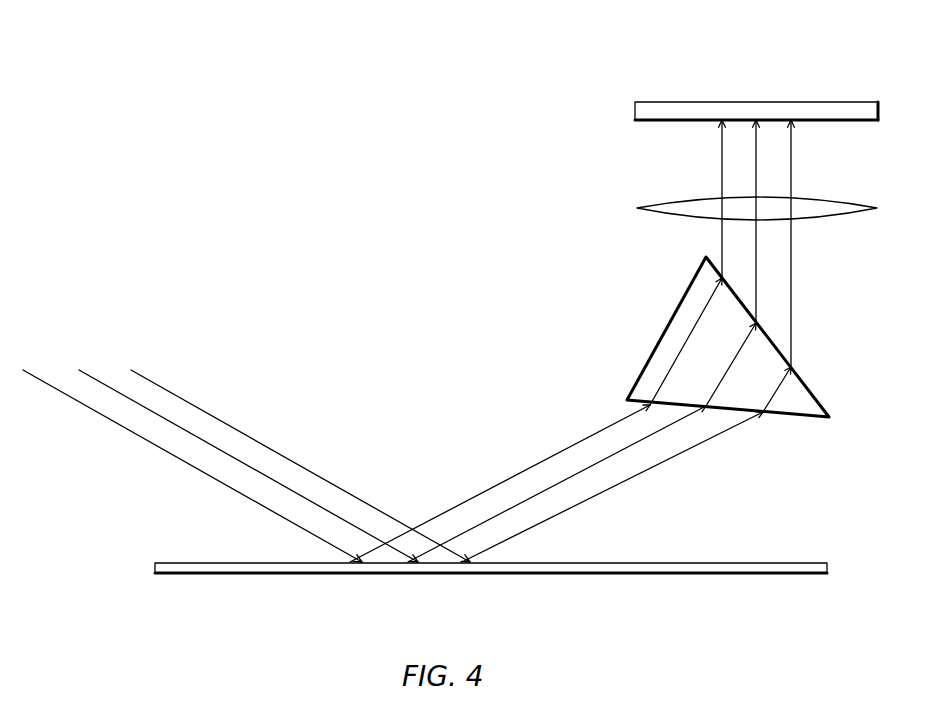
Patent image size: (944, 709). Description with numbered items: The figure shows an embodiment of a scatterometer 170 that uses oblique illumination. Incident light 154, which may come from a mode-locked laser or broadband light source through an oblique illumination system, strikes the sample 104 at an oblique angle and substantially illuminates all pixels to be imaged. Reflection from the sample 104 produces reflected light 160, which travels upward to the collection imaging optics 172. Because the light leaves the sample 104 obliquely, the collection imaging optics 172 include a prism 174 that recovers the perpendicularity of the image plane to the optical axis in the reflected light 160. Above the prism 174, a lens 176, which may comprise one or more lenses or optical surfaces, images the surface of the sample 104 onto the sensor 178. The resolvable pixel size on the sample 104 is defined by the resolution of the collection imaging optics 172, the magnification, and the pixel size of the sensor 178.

The scatterometer 170 is at (204, 70).
The sensor 178 is at (772, 102).
The collection imaging optics 172 is at (578, 147).
The lens 176 is at (637, 208).
The prism 174 is at (650, 355).
The incident light 154 is at (172, 393).
The reflected light 160 is at (522, 471).
The sample 104 is at (652, 573).